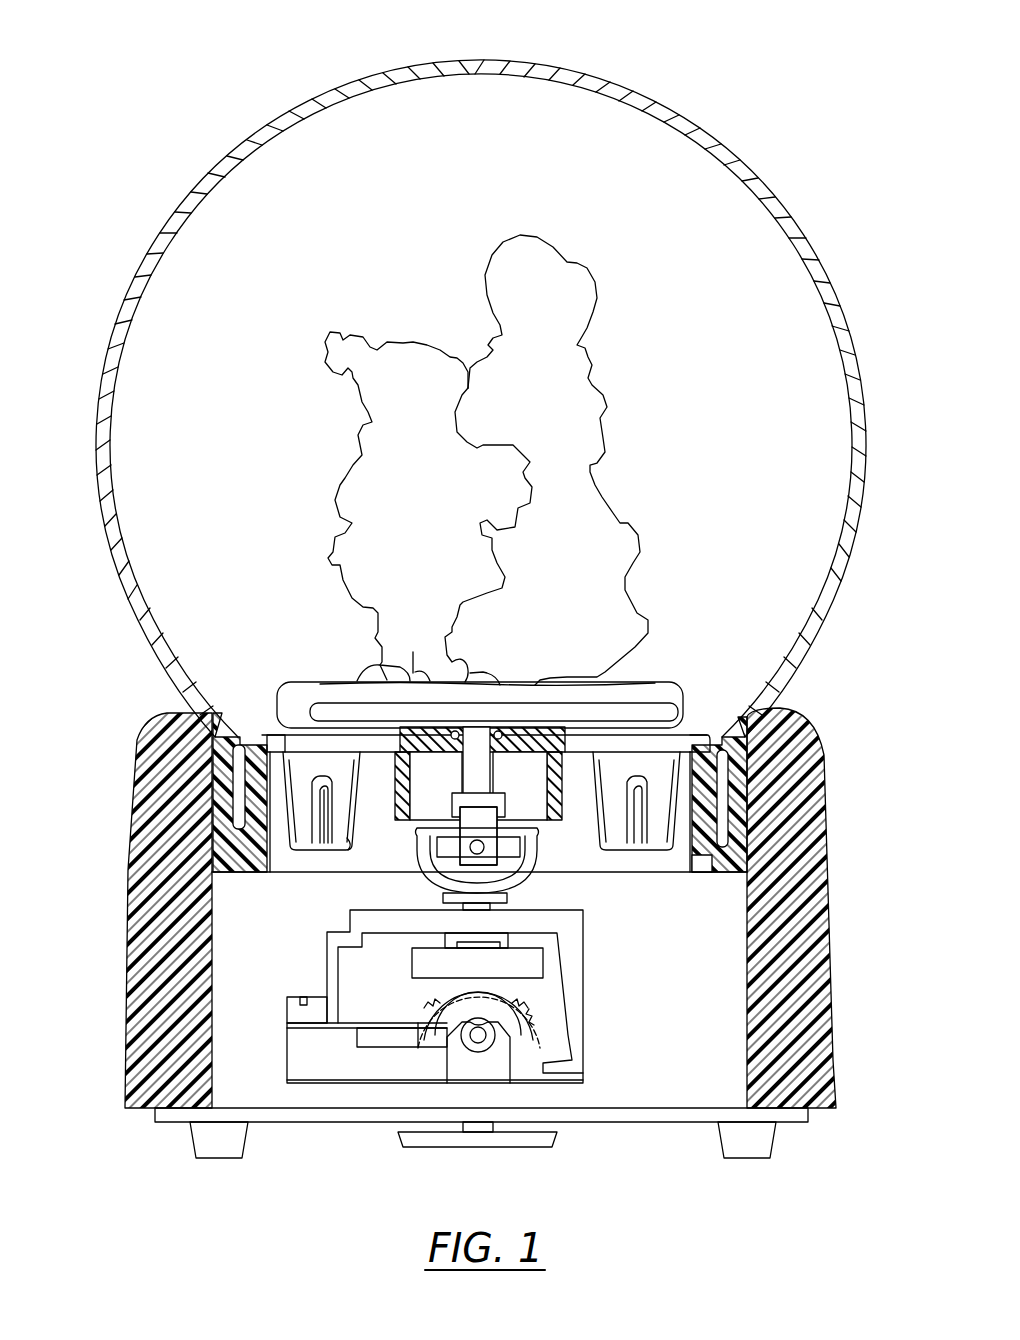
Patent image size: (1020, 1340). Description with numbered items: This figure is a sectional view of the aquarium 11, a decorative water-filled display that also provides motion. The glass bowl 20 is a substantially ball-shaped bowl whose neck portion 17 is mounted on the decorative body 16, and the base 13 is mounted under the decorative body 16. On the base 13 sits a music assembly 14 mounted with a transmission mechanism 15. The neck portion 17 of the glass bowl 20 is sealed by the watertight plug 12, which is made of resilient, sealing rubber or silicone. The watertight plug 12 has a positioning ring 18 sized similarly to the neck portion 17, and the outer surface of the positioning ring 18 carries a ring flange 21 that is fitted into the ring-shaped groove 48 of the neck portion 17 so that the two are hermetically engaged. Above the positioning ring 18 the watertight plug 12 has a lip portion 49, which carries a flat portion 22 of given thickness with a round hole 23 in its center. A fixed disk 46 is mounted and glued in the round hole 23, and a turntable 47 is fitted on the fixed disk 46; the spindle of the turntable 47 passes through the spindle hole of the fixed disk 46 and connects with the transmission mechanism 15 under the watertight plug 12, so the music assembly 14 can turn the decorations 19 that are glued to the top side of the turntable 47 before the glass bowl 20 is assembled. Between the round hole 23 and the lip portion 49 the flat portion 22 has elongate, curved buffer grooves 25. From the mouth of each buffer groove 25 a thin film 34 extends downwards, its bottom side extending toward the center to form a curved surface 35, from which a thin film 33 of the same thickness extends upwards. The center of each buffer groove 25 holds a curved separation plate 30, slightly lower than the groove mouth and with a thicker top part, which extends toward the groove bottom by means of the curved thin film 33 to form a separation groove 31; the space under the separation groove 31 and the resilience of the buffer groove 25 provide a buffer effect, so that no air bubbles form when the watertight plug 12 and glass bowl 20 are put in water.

The aquarium 11 is at (708, 86).
The watertight plug 12 is at (258, 773).
The base 13 is at (640, 1120).
The music assembly 14 is at (575, 1004).
The transmission mechanism 15 is at (560, 884).
The decorative body 16 is at (818, 933).
The neck portion 17 is at (716, 772).
The positioning ring 18 is at (732, 858).
The decorations 19 is at (580, 417).
The glass bowl 20 is at (768, 187).
The ring flange 21 is at (730, 822).
The flat portion 22 is at (300, 750).
The round hole 23 is at (566, 762).
The buffer grooves 25 is at (652, 768).
The separation plate 30 is at (316, 796).
The separation groove 31 is at (333, 848).
The thin film 33 is at (307, 848).
The thin film 34 is at (358, 828).
The curved surface 35 is at (340, 848).
The fixed disk 46 is at (575, 726).
The turntable 47 is at (643, 720).
The ring-shaped groove 48 is at (214, 837).
The lip portion 49 is at (266, 737).